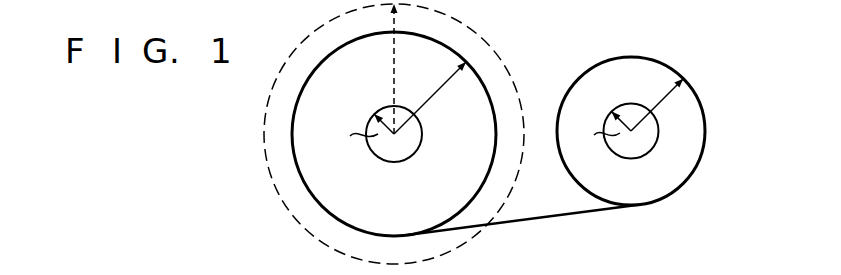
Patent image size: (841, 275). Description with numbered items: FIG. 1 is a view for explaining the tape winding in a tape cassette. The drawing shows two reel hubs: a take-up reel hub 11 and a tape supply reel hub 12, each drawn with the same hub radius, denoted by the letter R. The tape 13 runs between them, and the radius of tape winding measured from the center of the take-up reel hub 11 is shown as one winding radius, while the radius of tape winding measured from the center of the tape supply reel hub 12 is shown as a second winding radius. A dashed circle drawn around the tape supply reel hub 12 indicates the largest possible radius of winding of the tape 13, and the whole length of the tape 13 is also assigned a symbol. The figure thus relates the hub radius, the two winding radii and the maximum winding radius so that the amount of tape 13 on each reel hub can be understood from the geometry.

The take-up reel hub 11 is at (633, 158).
The tape supply reel hub 12 is at (398, 162).
The tape 13 is at (545, 215).